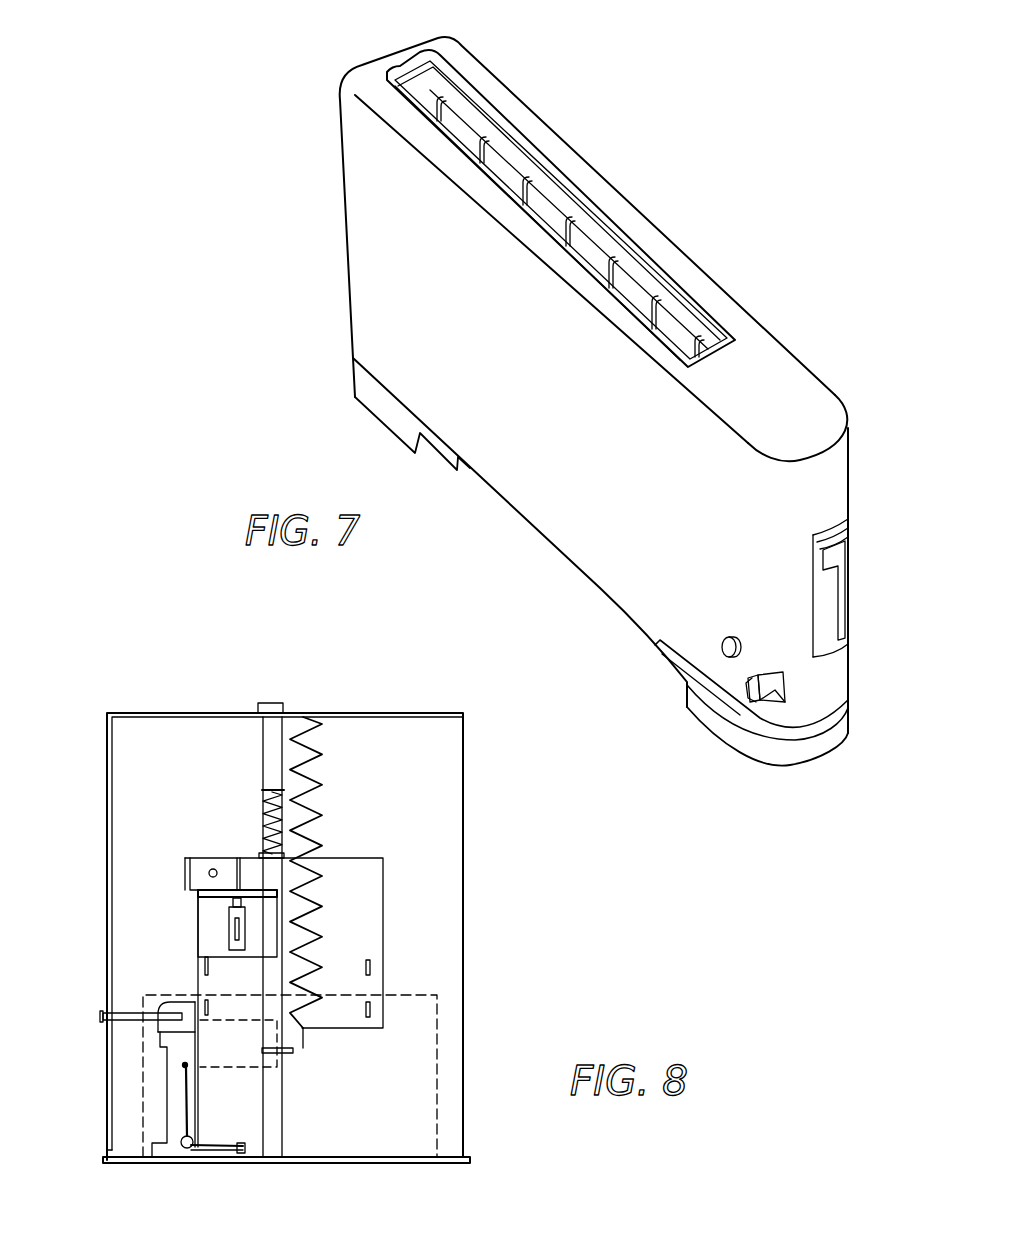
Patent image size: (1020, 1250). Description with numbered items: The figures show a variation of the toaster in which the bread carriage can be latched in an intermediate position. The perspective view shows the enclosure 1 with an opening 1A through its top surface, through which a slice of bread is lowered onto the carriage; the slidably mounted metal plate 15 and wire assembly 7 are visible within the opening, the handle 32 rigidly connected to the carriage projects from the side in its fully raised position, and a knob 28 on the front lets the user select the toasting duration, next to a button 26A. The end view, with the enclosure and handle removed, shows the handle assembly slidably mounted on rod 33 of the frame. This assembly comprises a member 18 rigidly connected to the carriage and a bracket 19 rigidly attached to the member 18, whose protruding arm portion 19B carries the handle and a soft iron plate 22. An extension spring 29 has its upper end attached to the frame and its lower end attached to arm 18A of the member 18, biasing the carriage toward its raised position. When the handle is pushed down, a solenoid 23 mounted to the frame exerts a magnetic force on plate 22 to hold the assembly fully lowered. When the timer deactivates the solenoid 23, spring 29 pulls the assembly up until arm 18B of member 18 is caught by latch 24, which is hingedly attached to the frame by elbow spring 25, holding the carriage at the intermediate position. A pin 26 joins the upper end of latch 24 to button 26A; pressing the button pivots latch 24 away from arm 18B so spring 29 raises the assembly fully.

In FIG. 7, the enclosure 1 is at (380, 290).
In FIG. 7, the opening 1A is at (410, 63).
In FIG. 7, the metal plate 15 is at (458, 100).
In FIG. 7, the wire assembly 7 is at (530, 173).
In FIG. 7, the handle 32 is at (843, 548).
In FIG. 7, the button 26A is at (723, 651).
In FIG. 7, the knob 28 is at (750, 692).
In FIG. 8, the rod 33 is at (273, 770).
In FIG. 8, the extension spring 29 is at (322, 770).
In FIG. 8, the member 18 is at (353, 857).
In FIG. 8, the bracket 19 is at (228, 867).
In FIG. 8, the soft iron plate 22 is at (217, 932).
In FIG. 8, the protruding arm portion 19B is at (230, 915).
In FIG. 8, the arm 18A is at (305, 1038).
In FIG. 8, the latch 24 is at (180, 1005).
In FIG. 8, the pin 26 is at (108, 1014).
In FIG. 8, the arm 18B is at (162, 1043).
In FIG. 8, the solenoid 23 is at (228, 1065).
In FIG. 8, the elbow spring 25 is at (215, 1150).